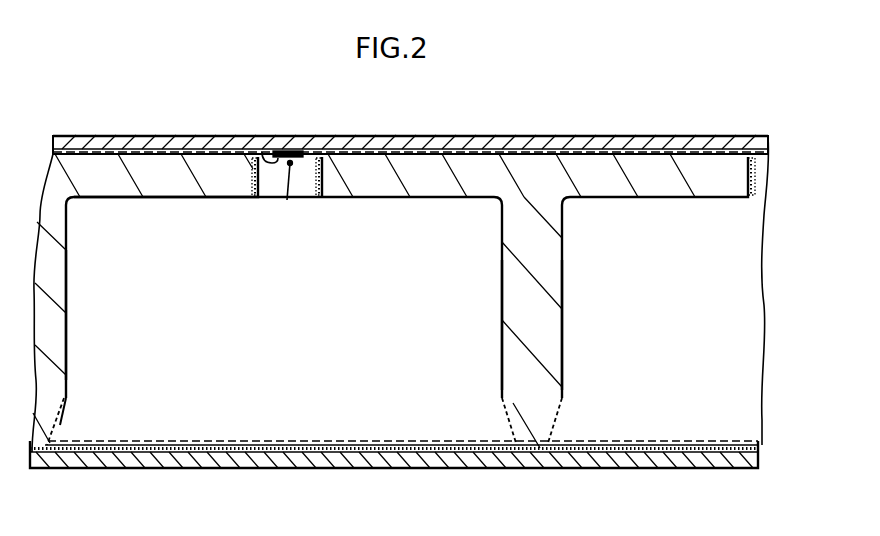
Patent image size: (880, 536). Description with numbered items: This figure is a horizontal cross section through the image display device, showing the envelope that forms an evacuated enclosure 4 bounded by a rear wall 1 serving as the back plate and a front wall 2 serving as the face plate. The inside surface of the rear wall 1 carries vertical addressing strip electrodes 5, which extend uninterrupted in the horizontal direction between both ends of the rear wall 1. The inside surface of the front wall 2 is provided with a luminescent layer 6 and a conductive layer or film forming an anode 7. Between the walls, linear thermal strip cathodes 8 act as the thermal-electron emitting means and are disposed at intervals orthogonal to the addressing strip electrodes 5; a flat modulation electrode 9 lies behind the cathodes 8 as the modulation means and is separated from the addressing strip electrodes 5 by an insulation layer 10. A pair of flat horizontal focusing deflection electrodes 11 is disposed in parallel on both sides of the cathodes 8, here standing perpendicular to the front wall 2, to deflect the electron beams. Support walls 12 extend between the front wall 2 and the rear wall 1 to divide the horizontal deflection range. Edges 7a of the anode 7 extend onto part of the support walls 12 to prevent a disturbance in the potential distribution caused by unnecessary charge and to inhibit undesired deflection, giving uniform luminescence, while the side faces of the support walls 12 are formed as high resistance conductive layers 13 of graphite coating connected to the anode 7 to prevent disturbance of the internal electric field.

The rear wall 1 is at (562, 143).
The front wall 2 is at (241, 460).
The evacuated enclosure 4 is at (683, 98).
The vertical addressing strip electrodes 5 is at (170, 141).
The luminescent layer 6 is at (173, 452).
The anode 7 is at (356, 448).
The edges of the anode 7a is at (52, 432).
The linear thermal strip cathodes 8 is at (282, 197).
The flat modulation electrode 9 is at (262, 150).
The insulation layer 10 is at (293, 146).
The flat horizontal focusing deflection electrodes 11 is at (255, 197).
The support walls 12 is at (533, 313).
The high resistance conductive layers 13 is at (66, 320).